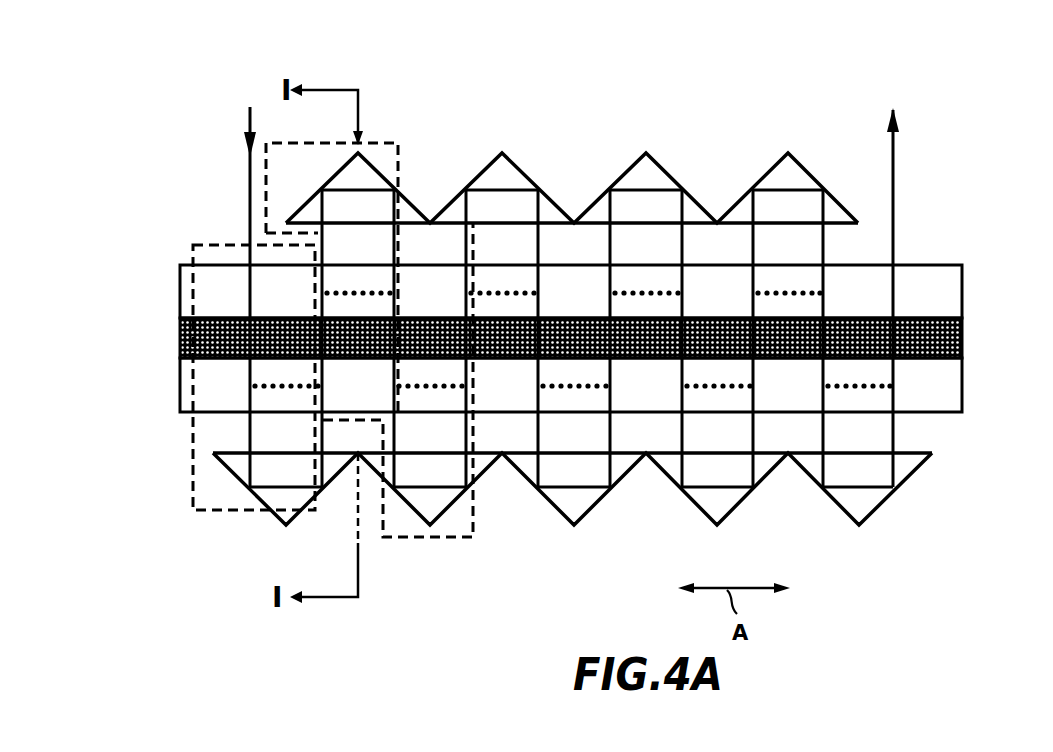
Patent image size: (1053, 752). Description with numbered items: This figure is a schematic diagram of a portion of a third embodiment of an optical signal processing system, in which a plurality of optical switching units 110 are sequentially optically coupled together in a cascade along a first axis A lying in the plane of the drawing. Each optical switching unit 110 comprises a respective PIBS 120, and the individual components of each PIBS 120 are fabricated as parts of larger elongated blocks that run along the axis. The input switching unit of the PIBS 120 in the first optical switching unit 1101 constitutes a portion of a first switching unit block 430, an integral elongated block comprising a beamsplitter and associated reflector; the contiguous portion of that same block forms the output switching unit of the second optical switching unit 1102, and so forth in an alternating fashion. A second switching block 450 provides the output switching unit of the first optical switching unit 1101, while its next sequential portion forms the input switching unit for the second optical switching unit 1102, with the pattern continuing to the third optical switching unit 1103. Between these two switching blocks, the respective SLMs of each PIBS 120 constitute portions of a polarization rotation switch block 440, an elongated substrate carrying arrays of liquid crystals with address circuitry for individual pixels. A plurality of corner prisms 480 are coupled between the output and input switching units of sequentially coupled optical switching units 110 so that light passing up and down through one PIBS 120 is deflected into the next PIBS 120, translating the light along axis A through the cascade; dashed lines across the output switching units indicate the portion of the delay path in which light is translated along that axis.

The optical switching unit 110 is at (321, 344).
The first optical switching unit 1101 is at (203, 245).
The second optical switching unit 1102 is at (376, 143).
The third optical switching unit 1103 is at (432, 538).
The PIBS 120 is at (569, 347).
The first switching unit block 430 is at (962, 285).
The polarization rotation switch block 440 is at (962, 340).
The second switching block 450 is at (962, 385).
The corner prism 480 is at (398, 178).